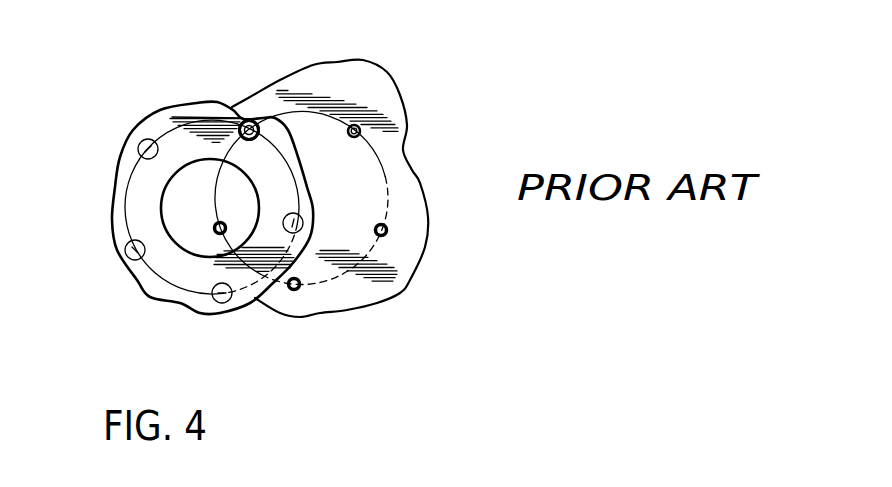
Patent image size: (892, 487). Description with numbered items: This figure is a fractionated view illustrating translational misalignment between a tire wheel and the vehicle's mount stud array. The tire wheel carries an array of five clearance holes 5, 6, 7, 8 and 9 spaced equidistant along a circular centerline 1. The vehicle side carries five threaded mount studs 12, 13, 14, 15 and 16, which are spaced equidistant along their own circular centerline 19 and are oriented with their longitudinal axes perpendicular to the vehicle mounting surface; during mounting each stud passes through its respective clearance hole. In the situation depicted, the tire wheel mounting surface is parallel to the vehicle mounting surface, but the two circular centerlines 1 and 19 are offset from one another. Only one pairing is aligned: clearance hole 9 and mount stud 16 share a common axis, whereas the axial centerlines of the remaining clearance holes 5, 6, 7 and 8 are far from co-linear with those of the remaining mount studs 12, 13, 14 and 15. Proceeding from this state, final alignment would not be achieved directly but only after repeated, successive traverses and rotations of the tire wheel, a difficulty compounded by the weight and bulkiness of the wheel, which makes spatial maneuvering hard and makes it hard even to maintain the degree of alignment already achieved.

The circular centerline 1 is at (122, 191).
The clearance hole 5 is at (304, 223).
The clearance hole 6 is at (222, 303).
The clearance hole 7 is at (126, 257).
The clearance hole 8 is at (139, 143).
The clearance hole 9 is at (250, 119).
The threaded mount stud 12 is at (361, 132).
The threaded mount stud 13 is at (387, 234).
The threaded mount stud 14 is at (298, 291).
The threaded mount stud 15 is at (216, 234).
The threaded mount stud 16 is at (255, 119).
The circular centerline 19 is at (322, 114).